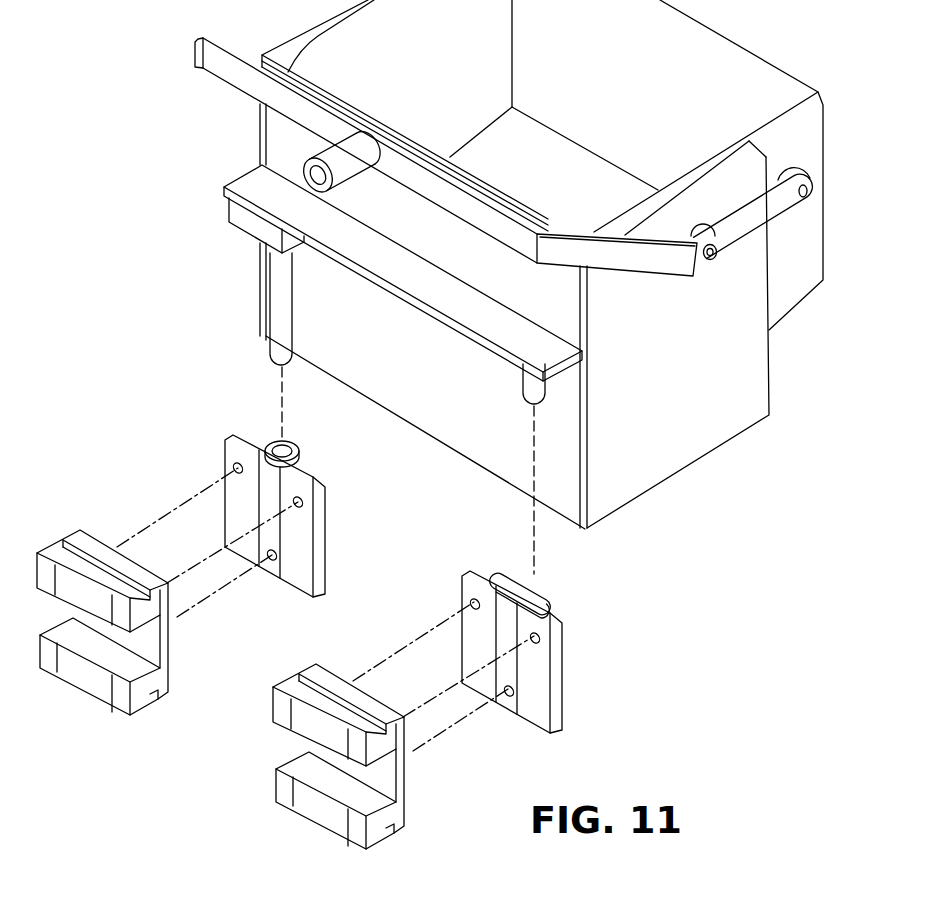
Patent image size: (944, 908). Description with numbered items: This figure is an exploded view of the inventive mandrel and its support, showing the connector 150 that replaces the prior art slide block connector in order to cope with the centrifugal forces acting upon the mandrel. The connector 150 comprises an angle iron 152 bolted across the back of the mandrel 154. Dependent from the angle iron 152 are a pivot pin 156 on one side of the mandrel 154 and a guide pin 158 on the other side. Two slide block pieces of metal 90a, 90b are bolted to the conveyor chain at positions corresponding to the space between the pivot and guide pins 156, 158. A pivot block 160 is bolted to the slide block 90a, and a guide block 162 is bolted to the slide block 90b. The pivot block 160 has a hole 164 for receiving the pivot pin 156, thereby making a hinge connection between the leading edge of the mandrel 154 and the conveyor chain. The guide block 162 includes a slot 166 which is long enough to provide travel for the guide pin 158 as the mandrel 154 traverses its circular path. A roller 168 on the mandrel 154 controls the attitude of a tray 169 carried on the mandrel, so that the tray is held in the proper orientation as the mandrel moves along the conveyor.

The connector 150 is at (132, 468).
The angle iron 152 is at (578, 378).
The mandrel 154 is at (700, 399).
The pivot pin 156 is at (293, 331).
The guide pin 158 is at (521, 388).
The pivot block 160 is at (322, 545).
The guide block 162 is at (563, 706).
The hole 164 is at (294, 451).
The slot 166 is at (545, 604).
The roller 168 is at (347, 181).
The tray 169 is at (828, 100).
The slide block 90a is at (117, 706).
The slide block 90b is at (357, 843).